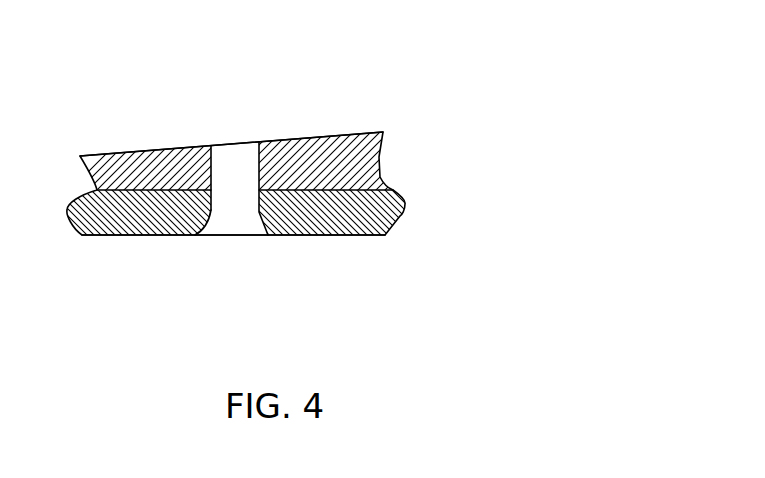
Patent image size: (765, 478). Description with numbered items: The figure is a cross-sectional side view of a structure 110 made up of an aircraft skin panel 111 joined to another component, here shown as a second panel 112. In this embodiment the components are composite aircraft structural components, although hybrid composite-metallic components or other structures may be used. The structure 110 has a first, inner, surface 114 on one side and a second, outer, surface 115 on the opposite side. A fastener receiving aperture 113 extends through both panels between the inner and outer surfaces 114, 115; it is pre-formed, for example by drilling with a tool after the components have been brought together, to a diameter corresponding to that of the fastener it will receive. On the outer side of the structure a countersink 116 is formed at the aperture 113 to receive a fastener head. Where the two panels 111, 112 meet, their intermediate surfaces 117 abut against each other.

The structure 110 is at (540, 130).
The aircraft skin panel 111 is at (385, 210).
The panel 112 is at (378, 162).
The fastener receiving aperture 113 is at (235, 225).
The inner surface 114 is at (343, 132).
The outer surface 115 is at (338, 235).
The countersink 116 is at (215, 228).
The intermediate surfaces 117 is at (128, 188).